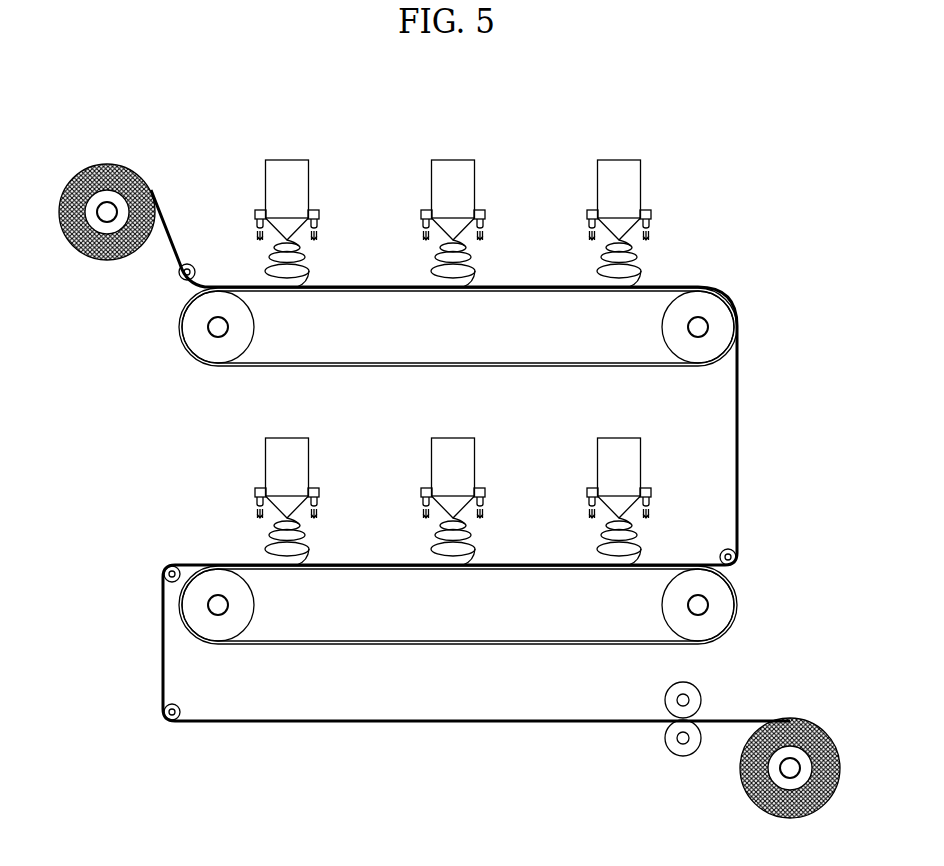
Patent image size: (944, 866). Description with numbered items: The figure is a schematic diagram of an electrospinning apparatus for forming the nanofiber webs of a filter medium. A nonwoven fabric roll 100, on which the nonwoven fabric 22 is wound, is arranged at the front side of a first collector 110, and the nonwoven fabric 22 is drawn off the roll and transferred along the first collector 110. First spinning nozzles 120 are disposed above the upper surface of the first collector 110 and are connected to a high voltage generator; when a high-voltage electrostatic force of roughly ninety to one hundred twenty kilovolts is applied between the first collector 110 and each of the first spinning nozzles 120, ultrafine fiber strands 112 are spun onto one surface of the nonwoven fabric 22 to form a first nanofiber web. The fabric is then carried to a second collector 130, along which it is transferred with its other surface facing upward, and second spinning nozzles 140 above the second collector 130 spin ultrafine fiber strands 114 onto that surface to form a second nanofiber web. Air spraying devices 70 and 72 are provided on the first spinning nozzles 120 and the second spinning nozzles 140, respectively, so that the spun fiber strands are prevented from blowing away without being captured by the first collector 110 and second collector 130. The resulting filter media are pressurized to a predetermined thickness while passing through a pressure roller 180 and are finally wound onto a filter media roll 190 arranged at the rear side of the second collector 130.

The nonwoven fabric roll 100 is at (108, 207).
The nonwoven fabric 22 is at (172, 238).
The air spraying device 70 is at (317, 216).
The ultrafine fiber strands 112 is at (310, 264).
The first spinning nozzles 120 is at (453, 200).
The first collector 110 is at (541, 366).
The second spinning nozzles 140 is at (453, 479).
The air spraying device 72 is at (317, 495).
The ultrafine fiber strands 114 is at (310, 543).
The second collector 130 is at (541, 644).
The pressure roller 180 is at (685, 698).
The filter media roll 190 is at (790, 775).